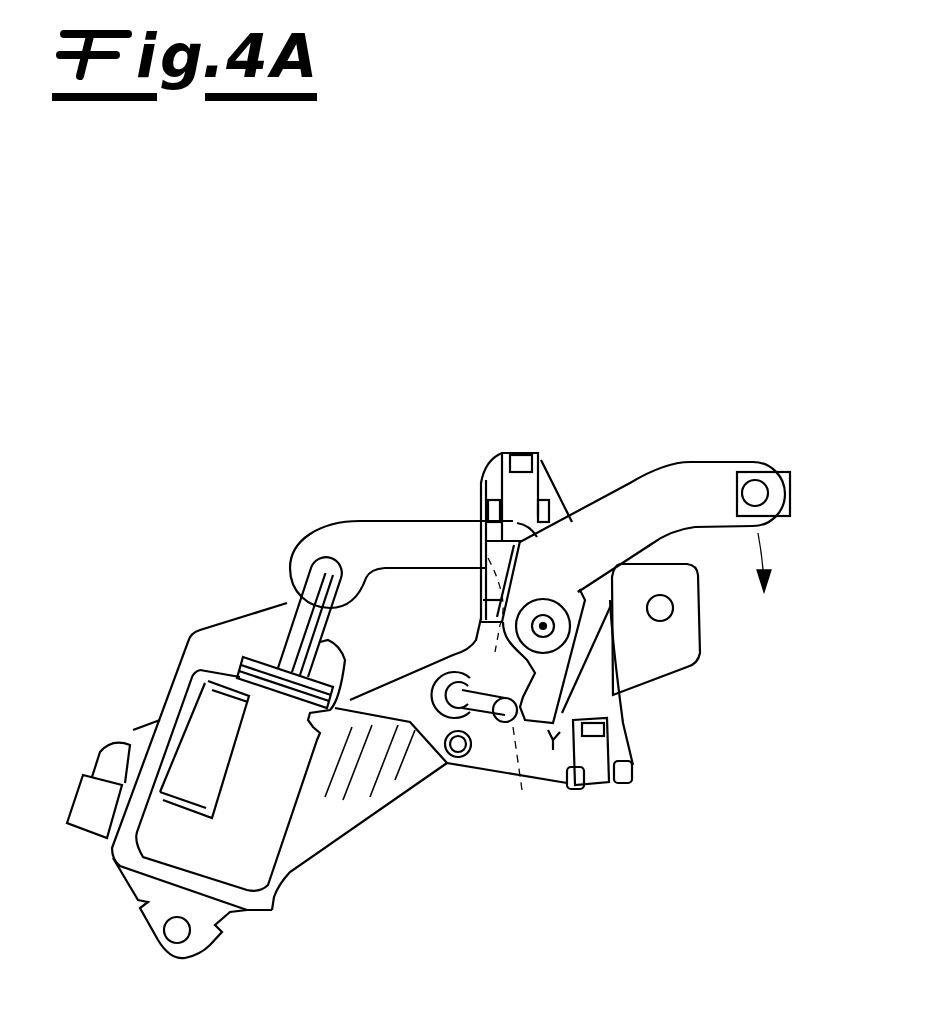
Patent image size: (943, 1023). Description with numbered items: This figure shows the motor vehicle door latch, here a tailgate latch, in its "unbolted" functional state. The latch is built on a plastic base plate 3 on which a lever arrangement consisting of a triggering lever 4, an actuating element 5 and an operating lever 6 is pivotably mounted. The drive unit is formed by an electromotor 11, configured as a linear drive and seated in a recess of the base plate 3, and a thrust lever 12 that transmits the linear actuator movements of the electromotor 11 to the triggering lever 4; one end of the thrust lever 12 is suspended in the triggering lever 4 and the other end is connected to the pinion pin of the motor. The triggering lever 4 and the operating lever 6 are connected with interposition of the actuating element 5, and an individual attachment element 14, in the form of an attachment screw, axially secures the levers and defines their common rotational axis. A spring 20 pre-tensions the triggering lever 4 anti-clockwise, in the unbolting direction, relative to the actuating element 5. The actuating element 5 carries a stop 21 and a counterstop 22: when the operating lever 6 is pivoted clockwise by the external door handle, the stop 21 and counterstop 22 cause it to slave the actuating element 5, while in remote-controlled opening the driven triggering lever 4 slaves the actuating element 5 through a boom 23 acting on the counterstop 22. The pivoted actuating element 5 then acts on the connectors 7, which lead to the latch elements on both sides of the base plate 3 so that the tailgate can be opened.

The base plate 3 is at (271, 912).
The triggering lever 4 is at (358, 530).
The actuating element 5 is at (600, 703).
The operating lever 6 is at (686, 478).
The connector 7 is at (520, 450).
The electromotor 11 is at (188, 743).
The thrust lever 12 is at (313, 583).
The individual attachment element 14 is at (557, 628).
The spring 20 is at (462, 770).
The stop 21 is at (495, 555).
The counterstop 22 is at (507, 717).
The boom 23 is at (560, 725).